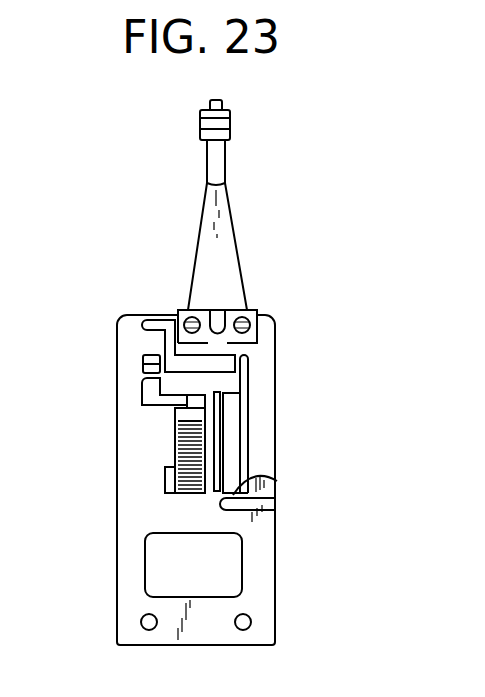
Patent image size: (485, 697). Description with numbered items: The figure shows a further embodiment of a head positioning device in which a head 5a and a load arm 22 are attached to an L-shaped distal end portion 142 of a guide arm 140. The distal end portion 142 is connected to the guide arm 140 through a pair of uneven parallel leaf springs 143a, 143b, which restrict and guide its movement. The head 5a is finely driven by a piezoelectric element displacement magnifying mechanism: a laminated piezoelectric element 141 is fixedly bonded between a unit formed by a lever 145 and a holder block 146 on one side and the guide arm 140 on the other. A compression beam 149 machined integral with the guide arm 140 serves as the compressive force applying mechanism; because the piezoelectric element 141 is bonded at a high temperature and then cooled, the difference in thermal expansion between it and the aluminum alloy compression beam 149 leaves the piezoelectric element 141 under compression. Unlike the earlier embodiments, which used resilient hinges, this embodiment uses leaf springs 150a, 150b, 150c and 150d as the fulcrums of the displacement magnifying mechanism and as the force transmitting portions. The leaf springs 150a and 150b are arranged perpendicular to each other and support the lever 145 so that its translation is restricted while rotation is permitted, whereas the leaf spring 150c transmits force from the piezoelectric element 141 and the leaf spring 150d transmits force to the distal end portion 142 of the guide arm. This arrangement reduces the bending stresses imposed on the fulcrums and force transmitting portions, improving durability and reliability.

The guide arm 140 is at (276, 572).
The load arm 22 is at (220, 242).
The head 5a is at (198, 123).
The leaf spring 143a is at (147, 313).
The leaf spring 150a is at (143, 363).
The leaf spring 150b is at (143, 377).
The leaf spring 150c is at (186, 400).
The holder block 146 is at (176, 418).
The laminated piezoelectric element 141 is at (166, 468).
The compression beam 149 is at (221, 432).
The distal end portion 142 is at (262, 465).
The lever 145 is at (236, 384).
The leaf spring 150d is at (249, 366).
The leaf spring 143b is at (276, 483).